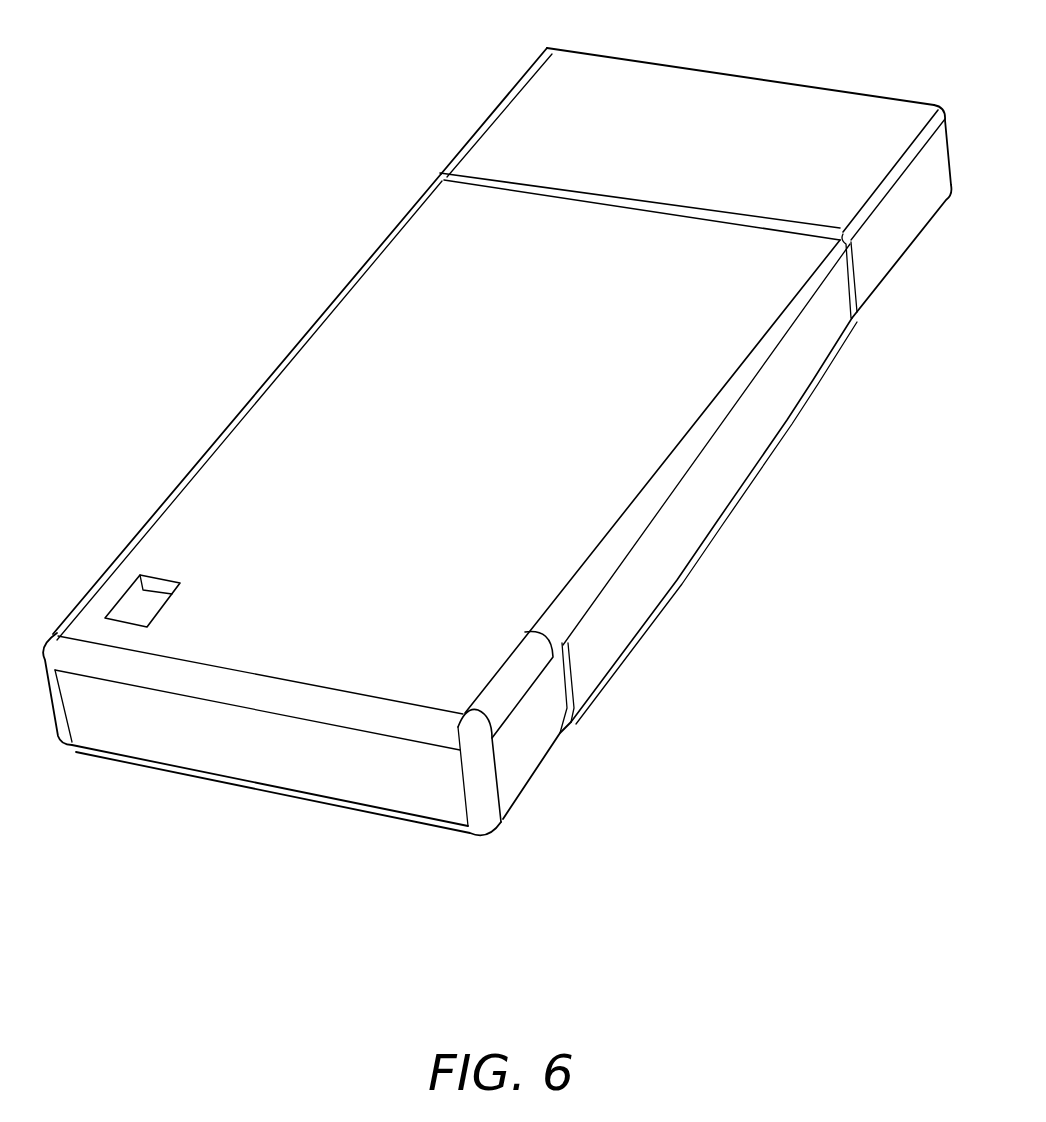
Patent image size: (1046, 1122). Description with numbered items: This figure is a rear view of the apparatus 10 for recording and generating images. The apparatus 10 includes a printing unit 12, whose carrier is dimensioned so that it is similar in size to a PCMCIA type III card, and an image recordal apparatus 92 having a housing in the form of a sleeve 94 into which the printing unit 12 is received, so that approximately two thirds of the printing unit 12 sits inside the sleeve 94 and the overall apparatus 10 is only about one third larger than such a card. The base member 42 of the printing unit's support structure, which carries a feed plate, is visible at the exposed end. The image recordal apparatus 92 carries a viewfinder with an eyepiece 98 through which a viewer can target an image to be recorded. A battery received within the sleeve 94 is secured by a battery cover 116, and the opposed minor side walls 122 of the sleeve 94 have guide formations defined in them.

The apparatus 10 is at (306, 114).
The printing unit 12 is at (633, 58).
The base member 42 is at (785, 95).
The image recordal apparatus 92 is at (238, 412).
The sleeve 94 is at (750, 445).
The eyepiece 98 is at (138, 603).
The battery cover 116 is at (518, 753).
The minor side walls 122 is at (663, 568).